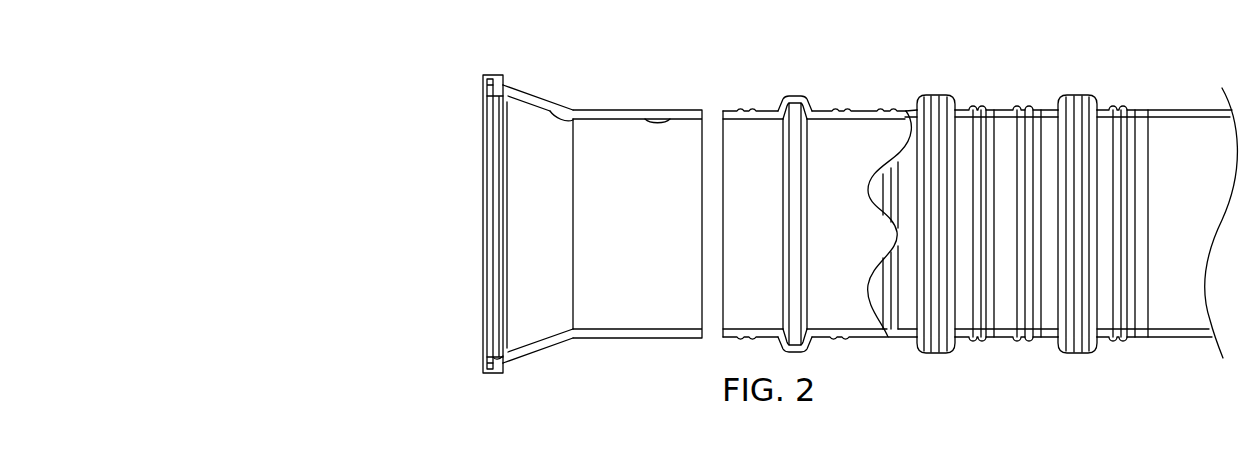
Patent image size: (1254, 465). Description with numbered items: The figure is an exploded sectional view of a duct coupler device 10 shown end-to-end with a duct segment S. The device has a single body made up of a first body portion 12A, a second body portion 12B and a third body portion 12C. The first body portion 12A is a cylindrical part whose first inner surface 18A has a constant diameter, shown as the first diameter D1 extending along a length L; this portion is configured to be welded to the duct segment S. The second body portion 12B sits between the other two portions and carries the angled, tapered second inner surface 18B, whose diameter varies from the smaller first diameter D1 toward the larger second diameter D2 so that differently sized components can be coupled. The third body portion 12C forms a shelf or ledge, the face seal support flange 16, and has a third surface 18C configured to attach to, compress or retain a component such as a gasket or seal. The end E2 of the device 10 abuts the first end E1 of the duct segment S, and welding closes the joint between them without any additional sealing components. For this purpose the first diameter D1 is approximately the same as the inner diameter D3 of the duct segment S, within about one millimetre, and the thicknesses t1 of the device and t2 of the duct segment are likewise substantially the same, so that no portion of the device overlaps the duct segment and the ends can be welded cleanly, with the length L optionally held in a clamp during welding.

The duct coupler device 10 is at (566, 370).
The first body portion 12A is at (632, 109).
The second body portion 12B is at (533, 95).
The third body portion 12C is at (497, 73).
The face seal support flange 16 is at (483, 96).
The first inner surface 18A is at (664, 118).
The second inner surface 18B is at (570, 108).
The third surface 18C is at (488, 362).
The first end of duct segment E1 is at (722, 109).
The end of device E2 is at (719, 100).
The duct segment S is at (1006, 109).
The thickness of device t1 is at (690, 175).
The thickness of duct segment t2 is at (865, 175).
The first diameter D1 is at (637, 118).
The second diameter D2 is at (541, 107).
The inner diameter of duct segment D3 is at (752, 118).
The length L is at (702, 355).